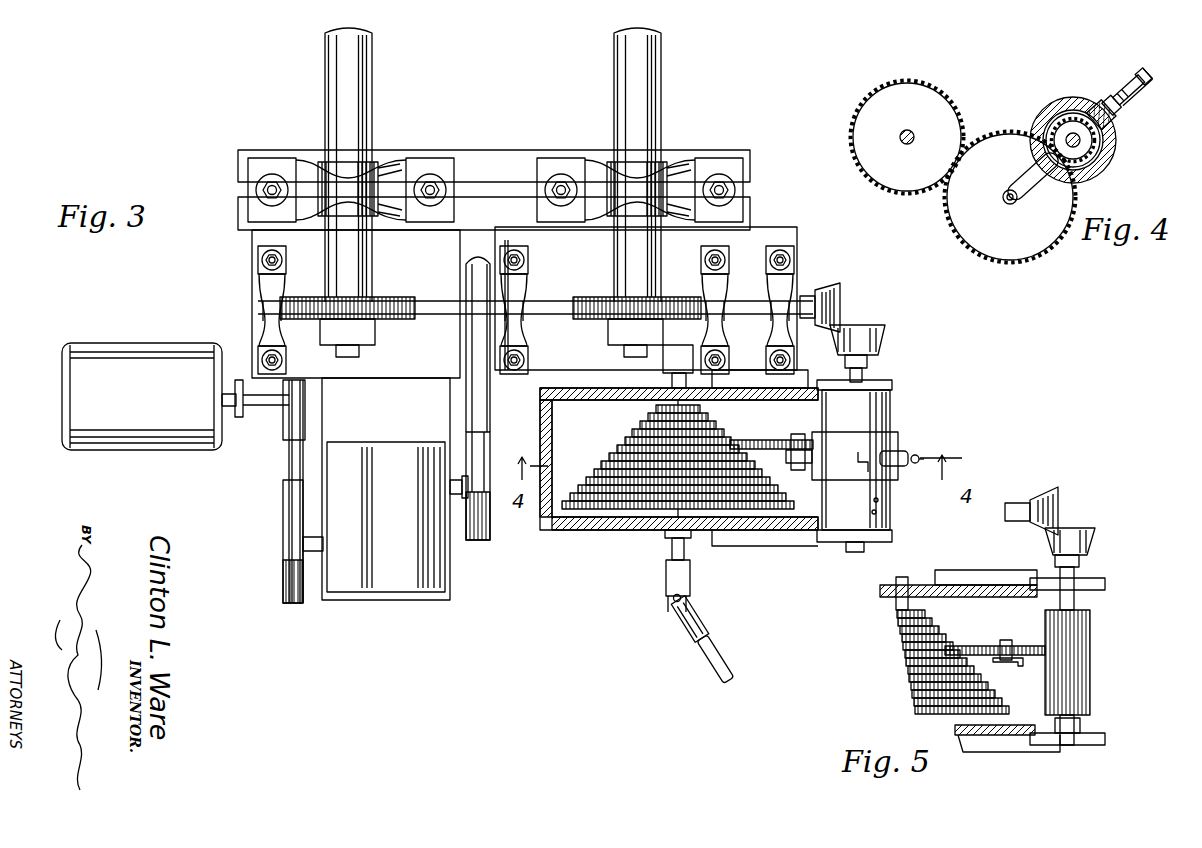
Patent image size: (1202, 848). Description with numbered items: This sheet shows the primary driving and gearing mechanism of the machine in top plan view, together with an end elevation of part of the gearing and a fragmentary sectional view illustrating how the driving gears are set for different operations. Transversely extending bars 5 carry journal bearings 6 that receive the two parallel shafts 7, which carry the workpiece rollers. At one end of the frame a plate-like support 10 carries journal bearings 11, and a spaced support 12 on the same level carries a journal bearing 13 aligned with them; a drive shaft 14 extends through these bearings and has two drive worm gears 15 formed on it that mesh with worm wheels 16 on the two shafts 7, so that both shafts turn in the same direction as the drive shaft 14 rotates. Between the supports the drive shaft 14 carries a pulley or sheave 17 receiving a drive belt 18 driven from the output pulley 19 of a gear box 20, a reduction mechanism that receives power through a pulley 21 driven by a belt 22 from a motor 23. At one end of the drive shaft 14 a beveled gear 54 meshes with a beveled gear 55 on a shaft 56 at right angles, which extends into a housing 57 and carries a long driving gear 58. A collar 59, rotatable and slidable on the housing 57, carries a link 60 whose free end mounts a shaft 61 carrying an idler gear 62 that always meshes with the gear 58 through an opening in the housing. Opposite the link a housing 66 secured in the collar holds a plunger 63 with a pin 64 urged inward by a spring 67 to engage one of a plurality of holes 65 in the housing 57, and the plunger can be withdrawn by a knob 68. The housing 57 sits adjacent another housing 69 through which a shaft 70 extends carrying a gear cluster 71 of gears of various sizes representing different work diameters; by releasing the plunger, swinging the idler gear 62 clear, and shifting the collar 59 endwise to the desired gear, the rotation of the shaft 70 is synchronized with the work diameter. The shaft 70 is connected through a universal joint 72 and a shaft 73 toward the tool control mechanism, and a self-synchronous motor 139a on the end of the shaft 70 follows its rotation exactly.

In FIG. 3, the transversely extending bars 5 is at (742, 150).
In FIG. 3, the journal bearings 6 is at (392, 162).
In FIG. 3, the parallel shafts 7 is at (372, 70).
In FIG. 3, the plate-like support 10 is at (782, 232).
In FIG. 3, the journal bearings 11 is at (524, 281).
In FIG. 3, the support 12 is at (252, 238).
In FIG. 3, the journal bearing 13 is at (260, 280).
In FIG. 3, the drive shaft 14 is at (448, 302).
In FIG. 3, the drive worm gears 15 is at (392, 296).
In FIG. 3, the worm wheels 16 is at (376, 318).
In FIG. 3, the pulley or sheave 17 is at (489, 380).
In FIG. 3, the drive belt 18 is at (488, 422).
In FIG. 3, the output pulley 19 is at (490, 530).
In FIG. 3, the gear box 20 is at (392, 600).
In FIG. 3, the pulley 21 is at (283, 573).
In FIG. 3, the belt 22 is at (289, 457).
In FIG. 3, the motor 23 is at (160, 352).
In FIG. 3, the self-synchronous motor 139a is at (663, 364).
In FIG. 3, the beveled gear 54 is at (843, 298).
In FIG. 5, the beveled gear 54 is at (1060, 498).
In FIG. 3, the beveled gear 55 is at (885, 328).
In FIG. 5, the beveled gear 55 is at (1093, 540).
In FIG. 3, the shaft 56 is at (862, 372).
In FIG. 4, the shaft 56 is at (1082, 138).
In FIG. 5, the shaft 56 is at (1075, 576).
In FIG. 3, the housing 57 is at (880, 408).
In FIG. 4, the housing 57 is at (1100, 142).
In FIG. 4, the long driving gear 58 is at (1092, 156).
In FIG. 5, the long driving gear 58 is at (1092, 648).
In FIG. 3, the collar 59 is at (898, 474).
In FIG. 4, the collar 59 is at (1108, 170).
In FIG. 3, the link 60 is at (806, 470).
In FIG. 4, the link 60 is at (1019, 185).
In FIG. 5, the link 60 is at (1018, 666).
In FIG. 3, the shaft 61 is at (796, 470).
In FIG. 4, the shaft 61 is at (1003, 193).
In FIG. 5, the shaft 61 is at (1006, 640).
In FIG. 3, the idler gear 62 is at (780, 440).
In FIG. 4, the idler gear 62 is at (1040, 250).
In FIG. 5, the idler gear 62 is at (975, 646).
In FIG. 4, the plunger 63 is at (1098, 98).
In FIG. 4, the pin 64 is at (1072, 96).
In FIG. 3, the holes 65 is at (885, 505).
In FIG. 3, the housing 66 is at (905, 455).
In FIG. 4, the housing 66 is at (1110, 92).
In FIG. 4, the spring 67 is at (1142, 100).
In FIG. 3, the knob 68 is at (922, 456).
In FIG. 4, the knob 68 is at (1140, 78).
In FIG. 3, the housing 69 is at (740, 530).
In FIG. 5, the housing 69 is at (988, 736).
In FIG. 3, the shaft 70 is at (672, 553).
In FIG. 4, the shaft 70 is at (900, 133).
In FIG. 5, the shaft 70 is at (895, 598).
In FIG. 3, the gear cluster 71 is at (630, 478).
In FIG. 4, the gear cluster 71 is at (904, 86).
In FIG. 5, the gear cluster 71 is at (905, 660).
In FIG. 3, the universal joint 72 is at (668, 600).
In FIG. 3, the shaft 73 is at (708, 665).